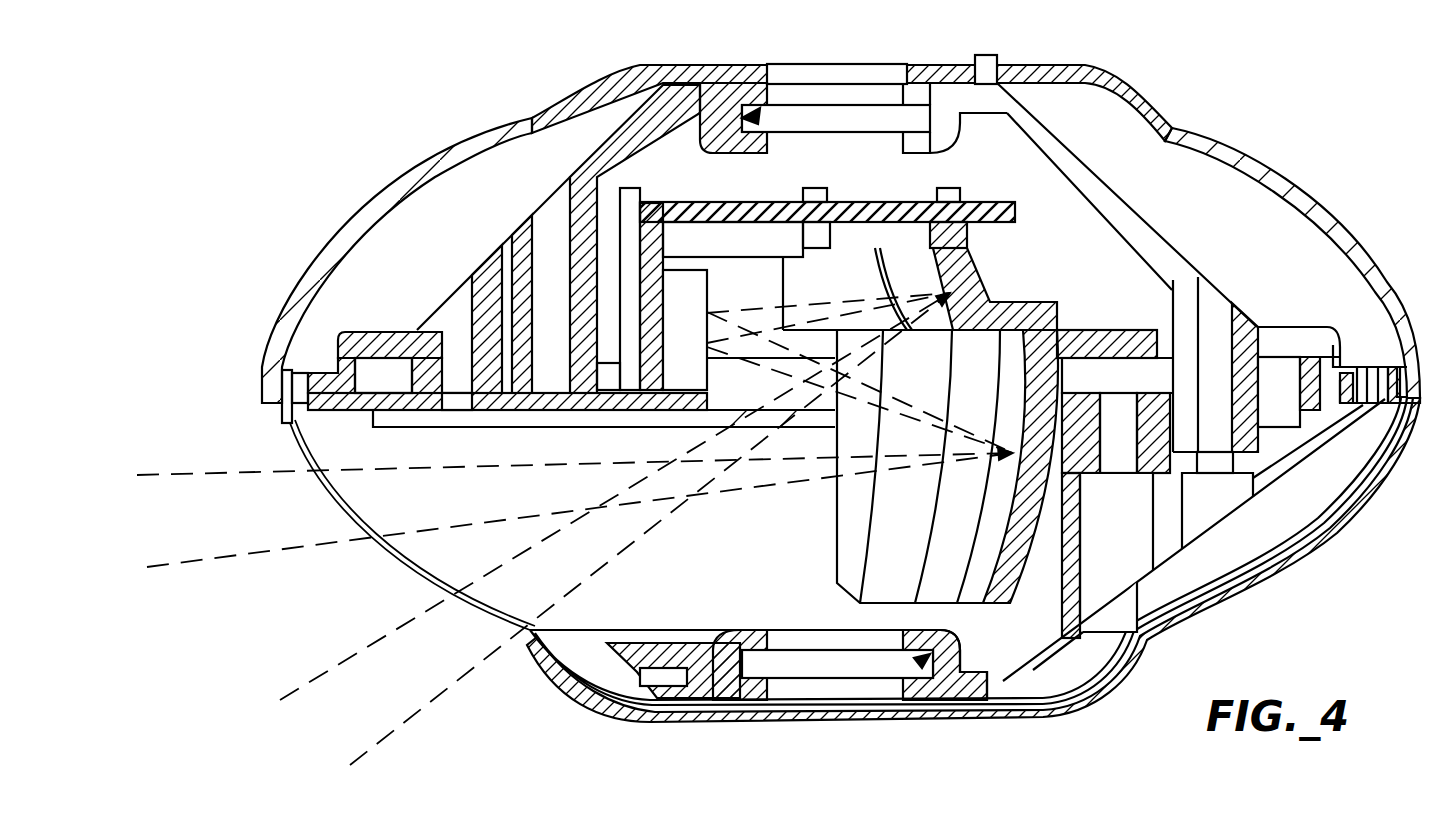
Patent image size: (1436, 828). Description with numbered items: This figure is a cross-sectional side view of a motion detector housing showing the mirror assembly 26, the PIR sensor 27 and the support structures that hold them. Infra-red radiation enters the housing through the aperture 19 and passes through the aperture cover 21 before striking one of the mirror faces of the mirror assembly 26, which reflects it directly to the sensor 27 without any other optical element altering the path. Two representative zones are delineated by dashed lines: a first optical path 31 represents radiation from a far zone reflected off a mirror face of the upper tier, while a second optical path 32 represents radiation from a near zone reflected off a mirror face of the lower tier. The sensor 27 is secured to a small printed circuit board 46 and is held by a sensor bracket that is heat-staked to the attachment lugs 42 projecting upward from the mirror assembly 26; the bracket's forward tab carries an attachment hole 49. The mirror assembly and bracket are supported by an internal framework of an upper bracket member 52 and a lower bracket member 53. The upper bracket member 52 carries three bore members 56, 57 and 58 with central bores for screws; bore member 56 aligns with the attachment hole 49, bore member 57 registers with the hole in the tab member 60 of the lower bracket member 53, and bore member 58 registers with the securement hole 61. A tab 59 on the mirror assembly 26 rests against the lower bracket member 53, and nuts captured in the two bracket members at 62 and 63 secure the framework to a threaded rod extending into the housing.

The aperture 19 is at (372, 610).
The aperture cover 21 is at (390, 558).
The mirror assembly 26 is at (1013, 290).
The PIR sensor 27 is at (718, 297).
The first optical path 31 is at (142, 473).
The second optical path 32 is at (337, 790).
The attachment lugs 42 is at (948, 187).
The printed circuit board 46 is at (627, 187).
The attachment hole 49 is at (545, 402).
The upper bracket member 52 is at (650, 107).
The lower bracket member 53 is at (1077, 540).
The bore member 56 is at (543, 247).
The bore member 57 is at (457, 318).
The bore member 58 is at (1250, 320).
The tab 59 is at (1077, 322).
The tab member 60 is at (318, 432).
The securement hole 61 is at (1232, 463).
The nut 62 is at (756, 117).
The nut 63 is at (896, 700).